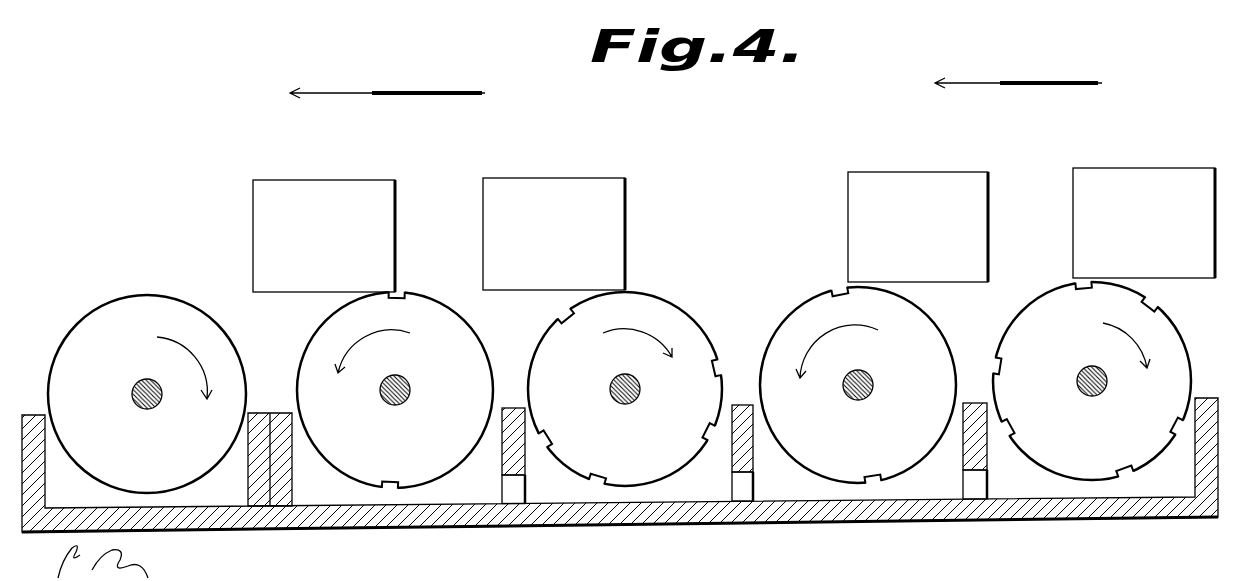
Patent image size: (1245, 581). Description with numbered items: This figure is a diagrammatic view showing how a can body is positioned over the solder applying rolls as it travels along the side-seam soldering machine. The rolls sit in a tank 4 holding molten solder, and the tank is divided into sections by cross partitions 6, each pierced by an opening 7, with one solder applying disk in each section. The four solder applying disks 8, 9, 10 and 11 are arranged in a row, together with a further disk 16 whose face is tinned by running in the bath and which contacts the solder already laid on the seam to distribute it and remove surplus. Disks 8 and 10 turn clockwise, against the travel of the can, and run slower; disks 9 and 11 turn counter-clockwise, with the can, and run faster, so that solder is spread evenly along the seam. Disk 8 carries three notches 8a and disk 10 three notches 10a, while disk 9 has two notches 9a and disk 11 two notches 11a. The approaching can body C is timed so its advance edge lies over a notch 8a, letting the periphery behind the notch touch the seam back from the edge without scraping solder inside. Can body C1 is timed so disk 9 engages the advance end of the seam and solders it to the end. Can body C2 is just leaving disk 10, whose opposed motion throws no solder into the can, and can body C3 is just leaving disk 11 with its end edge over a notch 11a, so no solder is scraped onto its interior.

The tank 4 is at (880, 515).
The cross partition 6 is at (510, 412).
The opening 7 is at (513, 490).
The solder applying disk 8 is at (1092, 381).
The notch 8a is at (1150, 300).
The solder applying disk 9 is at (858, 385).
The notch 9a is at (841, 282).
The solder applying disk 10 is at (625, 389).
The notch 10a is at (570, 313).
The solder applying disk 11 is at (395, 390).
The notch 11a is at (400, 292).
The disk 16 is at (147, 394).
The can body C is at (1142, 178).
The can body C1 is at (948, 180).
The can body C2 is at (607, 188).
The can body C3 is at (380, 193).